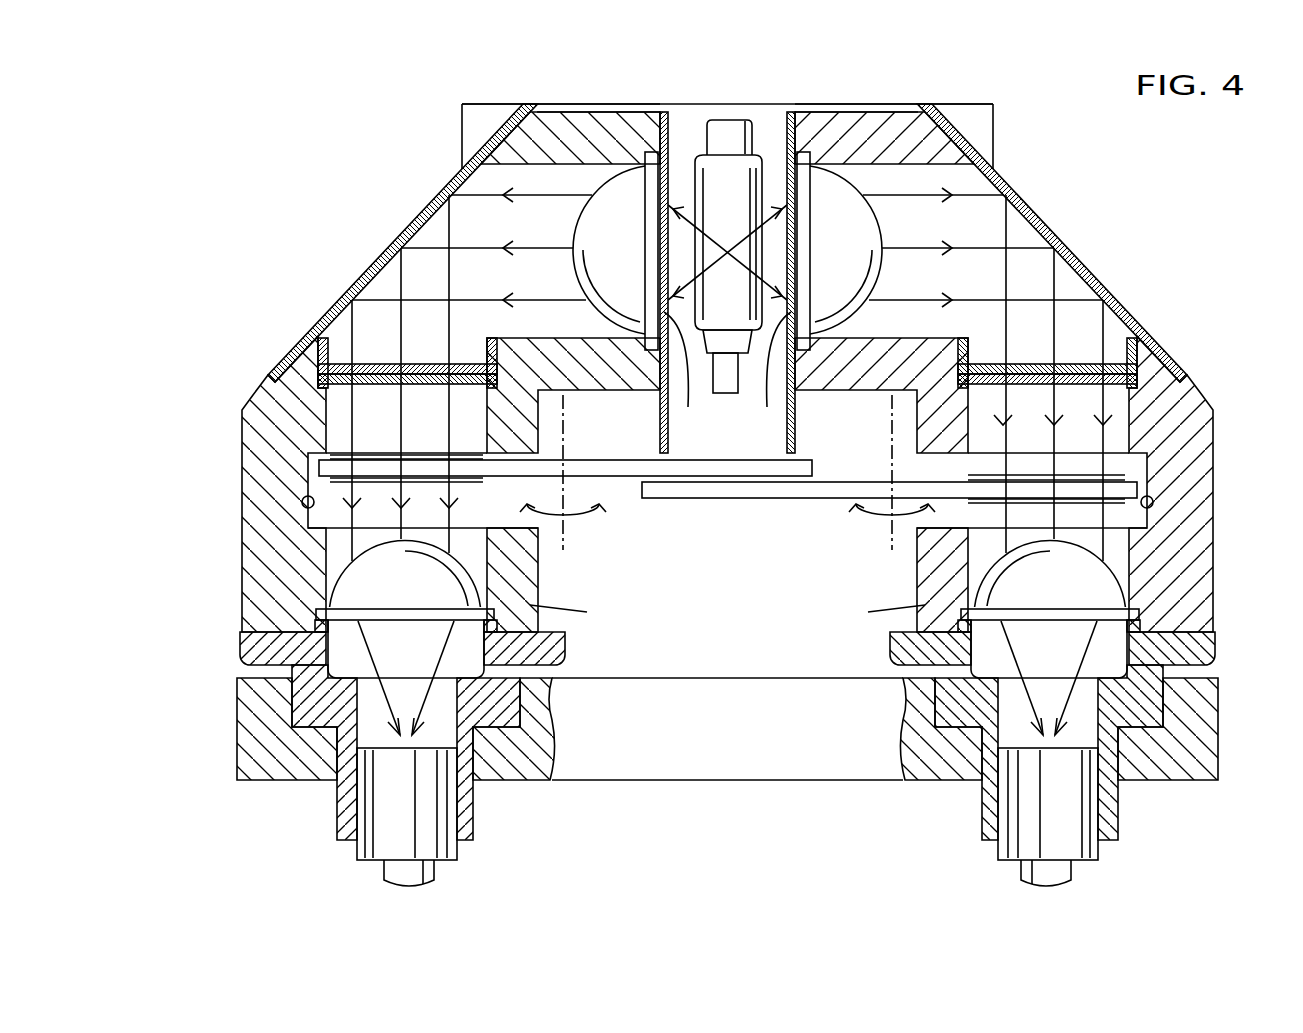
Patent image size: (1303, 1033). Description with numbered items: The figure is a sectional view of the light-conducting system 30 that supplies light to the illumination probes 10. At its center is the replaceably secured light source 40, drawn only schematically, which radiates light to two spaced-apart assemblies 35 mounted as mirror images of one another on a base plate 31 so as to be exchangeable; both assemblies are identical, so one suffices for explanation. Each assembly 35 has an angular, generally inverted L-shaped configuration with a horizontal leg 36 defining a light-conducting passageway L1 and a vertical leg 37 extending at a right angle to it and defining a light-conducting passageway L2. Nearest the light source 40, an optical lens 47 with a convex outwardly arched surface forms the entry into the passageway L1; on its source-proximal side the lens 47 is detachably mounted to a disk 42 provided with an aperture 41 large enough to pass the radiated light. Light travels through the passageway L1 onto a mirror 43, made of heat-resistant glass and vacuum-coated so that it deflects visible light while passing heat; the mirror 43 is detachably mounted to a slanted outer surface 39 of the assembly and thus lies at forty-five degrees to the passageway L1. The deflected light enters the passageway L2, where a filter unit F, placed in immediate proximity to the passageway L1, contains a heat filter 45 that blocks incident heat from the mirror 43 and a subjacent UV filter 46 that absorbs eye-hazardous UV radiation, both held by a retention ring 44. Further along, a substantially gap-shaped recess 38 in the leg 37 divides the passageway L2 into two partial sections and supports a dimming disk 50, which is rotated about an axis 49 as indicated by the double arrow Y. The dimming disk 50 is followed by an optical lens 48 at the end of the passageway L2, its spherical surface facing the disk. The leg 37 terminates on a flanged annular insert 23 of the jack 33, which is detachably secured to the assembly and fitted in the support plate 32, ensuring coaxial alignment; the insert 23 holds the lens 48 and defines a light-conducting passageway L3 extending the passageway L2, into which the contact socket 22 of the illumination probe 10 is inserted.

The illumination probe 10 is at (437, 873).
The contact socket 22 is at (423, 818).
The flanged annular insert 23 is at (345, 808).
The light-conducting system 30 is at (358, 135).
The base plate 31 is at (975, 122).
The support plate 32 is at (718, 745).
The jack 33 is at (330, 833).
The assembly 35 is at (596, 98).
The horizontal leg 36 is at (560, 118).
The vertical leg 37 is at (727, 684).
The recess 38 is at (303, 502).
The slanted outer surface 39 is at (250, 407).
The light source 40 is at (735, 170).
The aperture 41 is at (727, 370).
The disk 42 is at (673, 135).
The mirror 43 is at (392, 243).
The retention ring 44 is at (330, 340).
The heat filter 45 is at (427, 364).
The UV filter 46 is at (425, 388).
The optical lens 47 is at (629, 205).
The optical lens 48 is at (437, 592).
The axis 49 is at (563, 540).
The dimming disk 50 is at (600, 458).
The light-conducting passageway L1 is at (497, 223).
The light-conducting passageway L2 is at (375, 440).
The light-conducting passageway L3 is at (430, 722).
The filter unit F is at (385, 348).
The double arrow Y is at (527, 510).